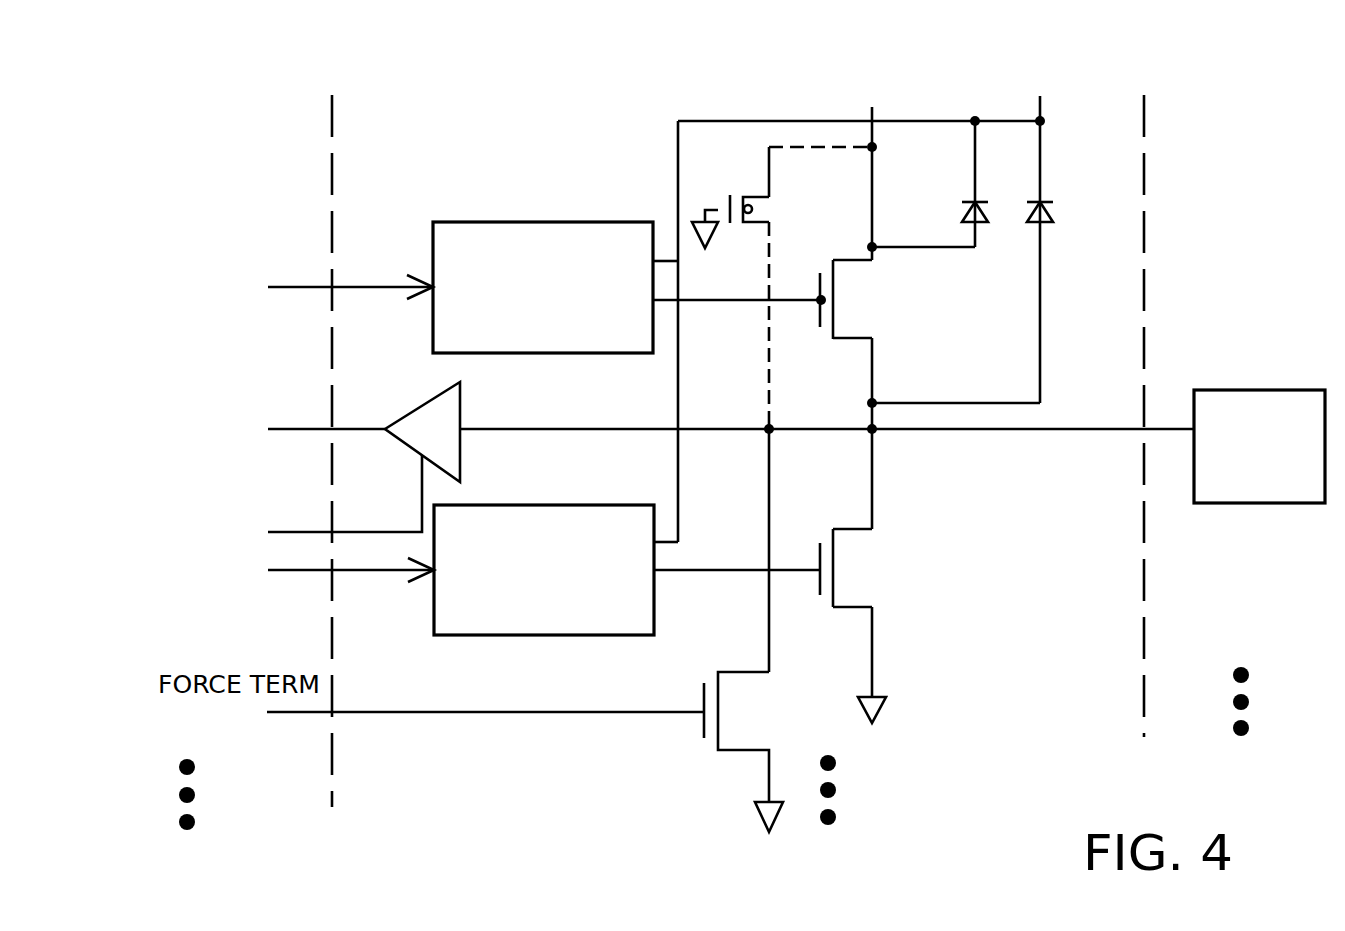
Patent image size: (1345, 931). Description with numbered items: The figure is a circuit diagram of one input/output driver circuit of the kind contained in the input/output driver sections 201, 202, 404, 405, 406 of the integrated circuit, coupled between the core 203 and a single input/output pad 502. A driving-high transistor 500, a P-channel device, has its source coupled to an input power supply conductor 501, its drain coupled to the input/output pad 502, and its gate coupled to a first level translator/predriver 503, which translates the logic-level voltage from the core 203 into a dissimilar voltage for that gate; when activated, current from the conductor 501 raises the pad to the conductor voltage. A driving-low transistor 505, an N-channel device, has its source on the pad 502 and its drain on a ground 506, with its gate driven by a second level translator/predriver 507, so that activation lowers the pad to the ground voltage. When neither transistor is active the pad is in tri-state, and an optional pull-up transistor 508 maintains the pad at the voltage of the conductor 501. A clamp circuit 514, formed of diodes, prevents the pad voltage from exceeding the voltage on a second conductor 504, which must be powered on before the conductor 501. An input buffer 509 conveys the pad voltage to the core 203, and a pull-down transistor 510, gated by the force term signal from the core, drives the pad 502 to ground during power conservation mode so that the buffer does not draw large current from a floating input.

The core section 203 is at (272, 426).
The input/output driver section 201 is at (750, 423).
The input/output driver section 202 is at (750, 423).
The input/output driver section 404 is at (750, 423).
The input/output driver section 405 is at (750, 434).
The input/output driver section 406 is at (750, 434).
The driving-high transistor 500 is at (834, 300).
The input power supply conductor 501 is at (859, 103).
The input/output pad 502 is at (1247, 403).
The first level translator/predriver 503 is at (640, 235).
The conductor 504 is at (1043, 107).
The driving-low transistor 505 is at (836, 570).
The ground 506 is at (874, 670).
The second level translator/predriver 507 is at (640, 618).
The pull-up transistor 508 is at (767, 172).
The input buffer 509 is at (443, 418).
The pull-down transistor 510 is at (536, 630).
The clamp circuit 514 is at (1097, 262).